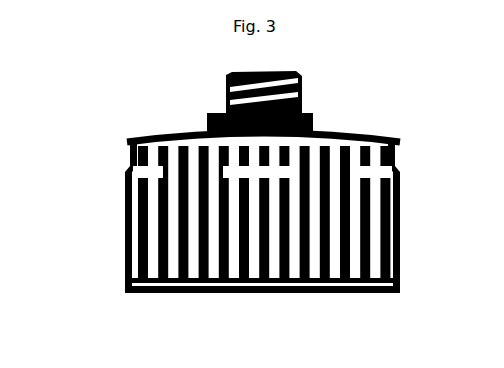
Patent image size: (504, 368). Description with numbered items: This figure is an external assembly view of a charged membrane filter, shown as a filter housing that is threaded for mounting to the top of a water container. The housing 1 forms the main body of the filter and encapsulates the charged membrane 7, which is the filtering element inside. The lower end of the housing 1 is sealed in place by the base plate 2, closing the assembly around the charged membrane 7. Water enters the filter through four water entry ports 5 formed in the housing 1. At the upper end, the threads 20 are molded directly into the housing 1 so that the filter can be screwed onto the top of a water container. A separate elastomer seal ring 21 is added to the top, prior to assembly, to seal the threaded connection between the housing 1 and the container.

The housing 1 is at (124, 248).
The base plate 2 is at (343, 294).
The water entry ports 5 is at (130, 174).
The charged membrane 7 is at (395, 172).
The threads 20 is at (224, 92).
The elastomer seal ring 21 is at (313, 117).